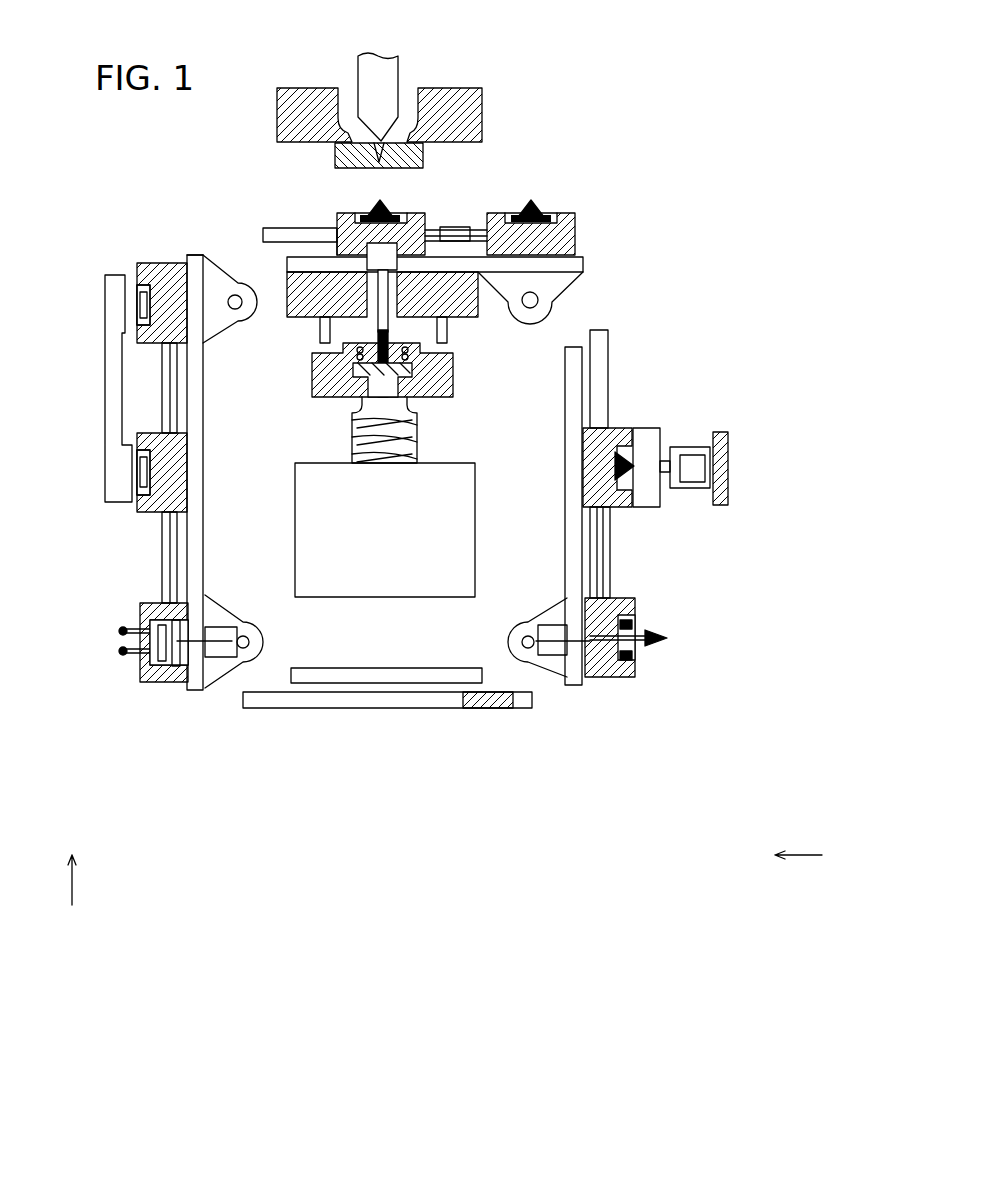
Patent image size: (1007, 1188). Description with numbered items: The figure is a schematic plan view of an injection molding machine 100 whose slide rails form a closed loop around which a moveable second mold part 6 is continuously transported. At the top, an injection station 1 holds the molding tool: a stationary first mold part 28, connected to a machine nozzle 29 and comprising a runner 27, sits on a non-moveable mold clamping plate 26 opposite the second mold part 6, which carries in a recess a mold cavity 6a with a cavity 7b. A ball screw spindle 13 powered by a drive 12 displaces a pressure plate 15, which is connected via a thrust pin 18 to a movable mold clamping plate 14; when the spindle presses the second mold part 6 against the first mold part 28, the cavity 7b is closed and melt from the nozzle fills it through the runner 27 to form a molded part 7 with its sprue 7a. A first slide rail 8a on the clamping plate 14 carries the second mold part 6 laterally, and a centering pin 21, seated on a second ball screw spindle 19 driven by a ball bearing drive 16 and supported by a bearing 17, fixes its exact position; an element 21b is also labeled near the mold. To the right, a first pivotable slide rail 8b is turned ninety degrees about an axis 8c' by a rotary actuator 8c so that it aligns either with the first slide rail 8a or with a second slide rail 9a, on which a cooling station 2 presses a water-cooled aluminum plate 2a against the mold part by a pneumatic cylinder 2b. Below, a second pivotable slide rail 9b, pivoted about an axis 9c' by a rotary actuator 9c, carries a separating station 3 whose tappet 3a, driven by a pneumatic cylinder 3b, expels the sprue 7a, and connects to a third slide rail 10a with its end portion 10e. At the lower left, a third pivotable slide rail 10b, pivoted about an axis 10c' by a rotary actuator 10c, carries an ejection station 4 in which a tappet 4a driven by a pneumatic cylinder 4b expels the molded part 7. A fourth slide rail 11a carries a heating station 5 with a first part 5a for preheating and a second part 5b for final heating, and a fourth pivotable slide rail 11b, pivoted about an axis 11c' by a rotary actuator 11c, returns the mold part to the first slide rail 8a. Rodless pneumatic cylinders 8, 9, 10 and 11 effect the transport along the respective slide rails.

The injection station 1 is at (558, 138).
The cooling station 2 is at (698, 388).
The water-cooled aluminum plate 2a is at (662, 432).
The pneumatic cylinder 2b is at (692, 460).
The separating station 3 is at (712, 686).
The tappet 3a is at (618, 680).
The pneumatic cylinder 3b is at (625, 690).
The ejection station 4 is at (108, 745).
The tappet 4a is at (130, 620).
The pneumatic cylinder 4b is at (172, 688).
The heating station 5 is at (80, 379).
The first part of the heating station 5a is at (97, 474).
The second part of the heating station 5b is at (105, 310).
The moveable second mold part 6 is at (427, 219).
The mold cavity 6a is at (416, 211).
The molded part 7 is at (392, 207).
The sprue 7a is at (368, 206).
The cavity 7b is at (140, 458).
The first pneumatic cylinder 8 is at (282, 226).
The first slide rail 8a is at (287, 262).
The first pivotable slide rail 8b is at (588, 259).
The rotary actuator 8c is at (582, 307).
The axis 8c' is at (593, 290).
The second pneumatic cylinder 9 is at (619, 375).
The second slide rail 9a is at (555, 487).
The second pivotable slide rail 9b is at (581, 698).
The rotary actuator 9c is at (536, 624).
The axis 9c' is at (499, 638).
The third pneumatic cylinder 10 is at (335, 710).
The third slide rail 10a is at (350, 670).
The third pivotable slide rail 10b is at (199, 700).
The rotary actuator 10c is at (256, 641).
The axis 10c' is at (289, 640).
The rail end section 10e is at (478, 708).
The fourth pneumatic cylinder 11 is at (165, 556).
The fourth slide rail 11a is at (213, 492).
The fourth pivotable slide rail 11b is at (185, 258).
The rotary actuator 11c is at (172, 257).
The axis 11c' is at (254, 336).
The drive 12 is at (490, 548).
The ball screw spindle 13 is at (420, 440).
The movable mold clamping plate 14 is at (300, 325).
The pressure plate 15 is at (455, 392).
The ball bearing drive 16 is at (455, 370).
The bearing 17 is at (392, 325).
The thrust pin 18 is at (450, 330).
The second ball screw spindle 19 is at (350, 388).
The centering pin 21 is at (352, 214).
The clamping block side 21b is at (336, 230).
The non-moveable mold clamping plate 26 is at (483, 94).
The runner 27 is at (333, 155).
The stationary first mold part 28 is at (424, 155).
The machine nozzle 29 is at (400, 58).
The injection molding machine 100 is at (434, 928).